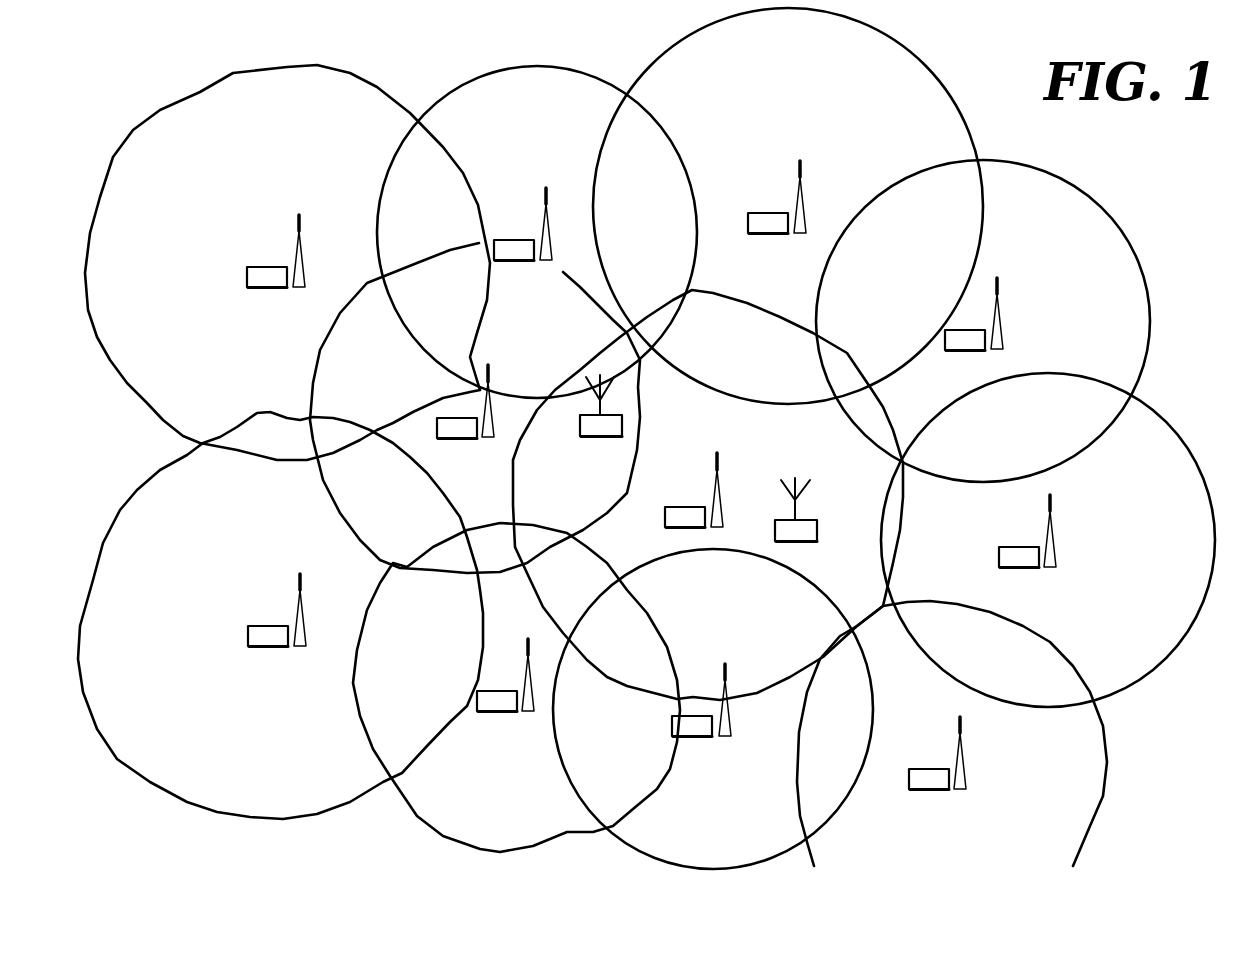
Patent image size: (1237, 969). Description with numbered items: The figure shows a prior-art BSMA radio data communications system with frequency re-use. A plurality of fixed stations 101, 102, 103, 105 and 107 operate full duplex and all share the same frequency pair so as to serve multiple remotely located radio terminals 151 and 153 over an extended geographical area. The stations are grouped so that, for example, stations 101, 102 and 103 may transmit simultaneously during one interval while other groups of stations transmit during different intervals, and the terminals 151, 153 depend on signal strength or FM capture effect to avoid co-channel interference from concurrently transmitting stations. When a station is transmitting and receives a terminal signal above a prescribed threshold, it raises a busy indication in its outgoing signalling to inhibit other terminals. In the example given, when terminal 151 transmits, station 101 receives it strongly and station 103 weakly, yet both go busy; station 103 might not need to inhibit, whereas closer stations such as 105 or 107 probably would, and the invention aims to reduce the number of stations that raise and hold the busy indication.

The fixed station 101 is at (733, 454).
The fixed station 102 is at (476, 668).
The fixed station 103 is at (250, 250).
The fixed station 105 is at (758, 195).
The fixed station 107 is at (515, 223).
The radio terminal 151 is at (582, 453).
The radio terminal 153 is at (827, 536).